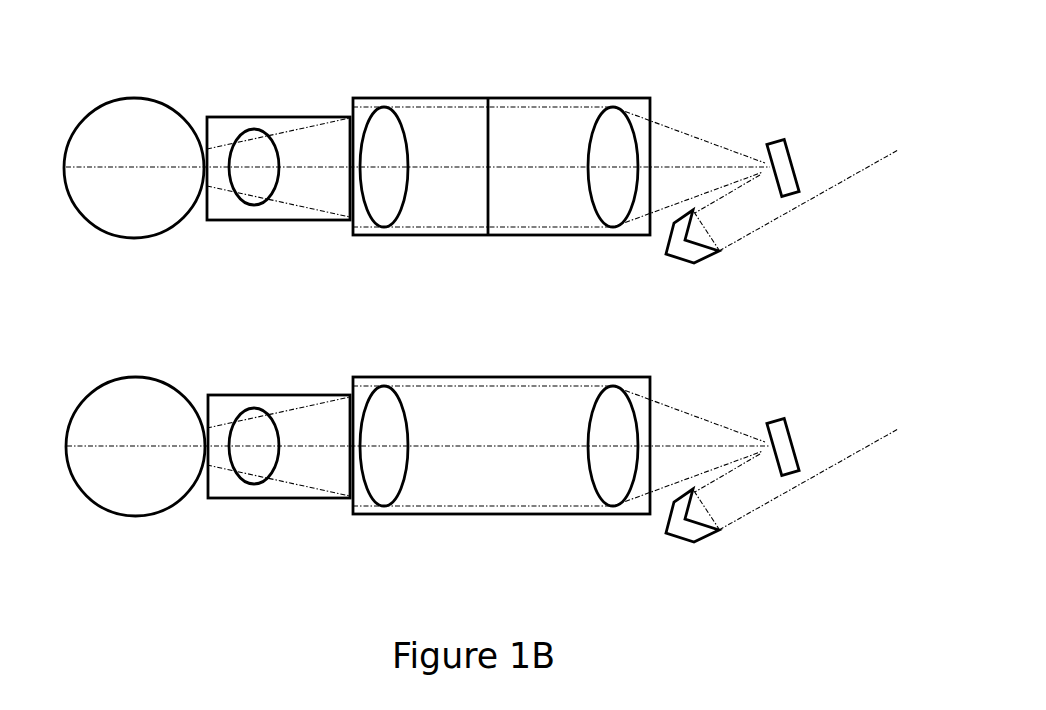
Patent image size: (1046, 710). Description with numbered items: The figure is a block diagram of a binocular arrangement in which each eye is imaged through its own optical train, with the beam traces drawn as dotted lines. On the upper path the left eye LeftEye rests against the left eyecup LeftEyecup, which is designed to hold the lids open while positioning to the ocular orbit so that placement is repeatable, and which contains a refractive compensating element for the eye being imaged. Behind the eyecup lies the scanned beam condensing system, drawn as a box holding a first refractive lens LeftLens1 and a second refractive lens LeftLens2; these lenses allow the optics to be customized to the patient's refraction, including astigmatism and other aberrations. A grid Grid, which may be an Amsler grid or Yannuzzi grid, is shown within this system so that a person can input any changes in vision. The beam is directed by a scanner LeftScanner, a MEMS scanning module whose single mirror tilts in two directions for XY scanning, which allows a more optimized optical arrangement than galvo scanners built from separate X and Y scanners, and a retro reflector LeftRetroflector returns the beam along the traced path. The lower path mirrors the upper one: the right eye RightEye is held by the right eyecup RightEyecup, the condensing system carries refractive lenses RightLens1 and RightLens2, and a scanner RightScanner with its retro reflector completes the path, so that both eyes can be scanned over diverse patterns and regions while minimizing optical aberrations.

The eye LeftEye is at (75, 215).
The eyecup LeftEyecup is at (271, 150).
The grid Grid is at (514, 166).
The refractive lens LeftLens1 is at (368, 223).
The refractive lens LeftLens2 is at (597, 224).
The scanner LeftScanner is at (797, 151).
The retro reflector LeftRetroflector is at (714, 259).
The eye RightEye is at (75, 497).
The eyecup RightEyecup is at (270, 421).
The refractive lens RightLens1 is at (378, 503).
The refractive lens RightLens2 is at (617, 490).
The scanner RightScanner is at (806, 429).